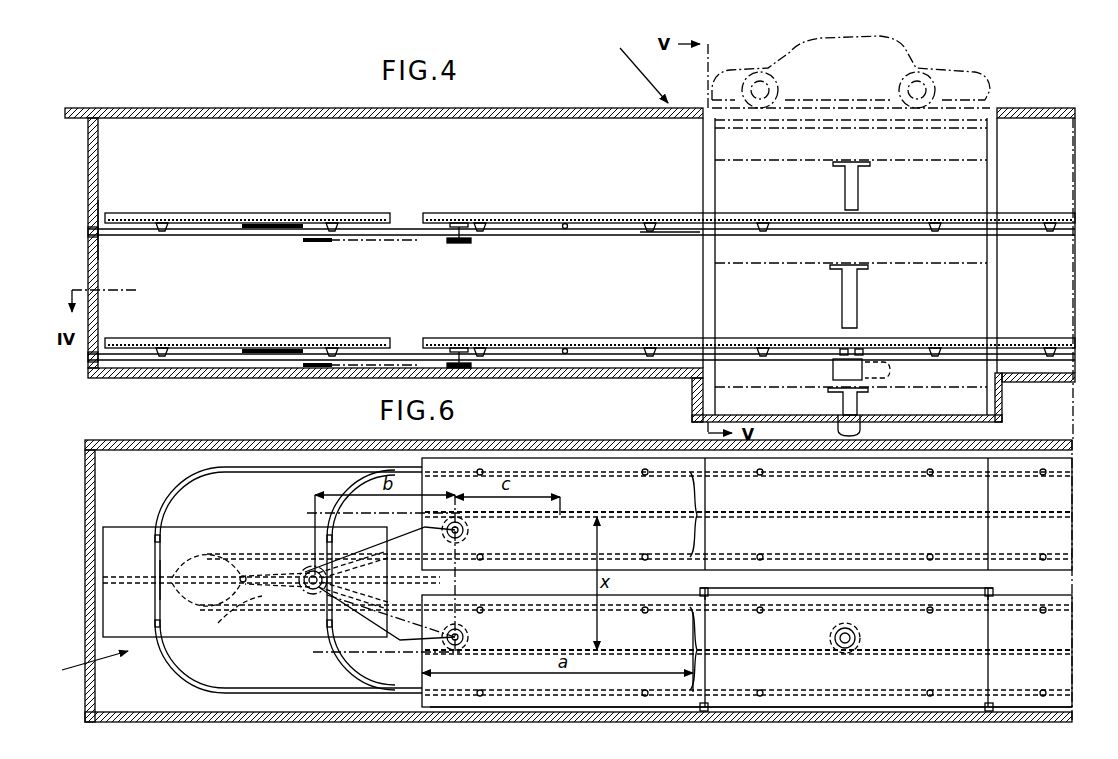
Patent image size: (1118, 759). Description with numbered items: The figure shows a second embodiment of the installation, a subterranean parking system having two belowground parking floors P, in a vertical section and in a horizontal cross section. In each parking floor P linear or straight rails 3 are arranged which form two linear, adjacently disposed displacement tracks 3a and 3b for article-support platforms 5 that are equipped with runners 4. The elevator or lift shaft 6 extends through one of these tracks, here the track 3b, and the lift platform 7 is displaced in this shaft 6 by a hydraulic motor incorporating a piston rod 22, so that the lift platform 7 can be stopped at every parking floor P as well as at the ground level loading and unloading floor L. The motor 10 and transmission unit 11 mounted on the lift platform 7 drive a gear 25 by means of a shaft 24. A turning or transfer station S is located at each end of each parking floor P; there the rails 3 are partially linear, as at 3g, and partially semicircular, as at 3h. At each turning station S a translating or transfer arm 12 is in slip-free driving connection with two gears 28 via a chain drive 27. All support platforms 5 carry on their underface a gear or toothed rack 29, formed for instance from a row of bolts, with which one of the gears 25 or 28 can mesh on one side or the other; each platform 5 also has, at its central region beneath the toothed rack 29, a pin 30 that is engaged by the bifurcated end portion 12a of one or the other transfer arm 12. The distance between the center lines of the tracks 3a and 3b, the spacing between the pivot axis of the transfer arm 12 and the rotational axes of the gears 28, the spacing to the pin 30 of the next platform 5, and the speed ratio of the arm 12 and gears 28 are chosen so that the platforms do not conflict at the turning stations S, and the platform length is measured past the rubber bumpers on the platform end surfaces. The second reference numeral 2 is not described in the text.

In FIG. 4, the rail 2 is at (690, 234).
In FIG. 6, the rails 3 is at (230, 471).
In FIG. 6, the displacement track 3a is at (679, 514).
In FIG. 6, the displacement track 3b is at (679, 648).
In FIG. 6, the linear rail portion 3g is at (283, 693).
In FIG. 6, the semicircular rail portion 3h is at (173, 670).
In FIG. 4, the runners 4 is at (162, 232).
In FIG. 6, the runners 4 is at (645, 478).
In FIG. 4, the article-support platform 5 is at (250, 212).
In FIG. 6, the article-support platform 5 is at (148, 535).
In FIG. 6, the lift shaft 6 is at (848, 712).
In FIG. 4, the lift platform 7 is at (922, 156).
In FIG. 6, the lift platform 7 is at (760, 646).
In FIG. 4, the motor 10 is at (891, 372).
In FIG. 4, the transmission unit 11 is at (832, 372).
In FIG. 4, the transfer arm 12 is at (272, 230).
In FIG. 6, the transfer arm 12 is at (277, 588).
In FIG. 6, the bifurcated end portion 12a is at (220, 615).
In FIG. 4, the piston rod 22 is at (860, 186).
In FIG. 4, the shaft 24 is at (843, 350).
In FIG. 4, the gear 25 is at (860, 350).
In FIG. 6, the gear 25 is at (860, 636).
In FIG. 4, the chain drive 27 is at (378, 243).
In FIG. 6, the chain drive 27 is at (404, 632).
In FIG. 4, the gears 28 is at (460, 222).
In FIG. 6, the gears 28 is at (452, 626).
In FIG. 4, the toothed rack 29 is at (210, 236).
In FIG. 6, the toothed rack 29 is at (152, 576).
In FIG. 4, the pin 30 is at (565, 236).
In FIG. 6, the pin 30 is at (240, 576).
In FIG. 4, the parking floor P is at (120, 262).
In FIG. 4, the loading and unloading floor L is at (634, 69).
In FIG. 6, the turning station S is at (84, 667).